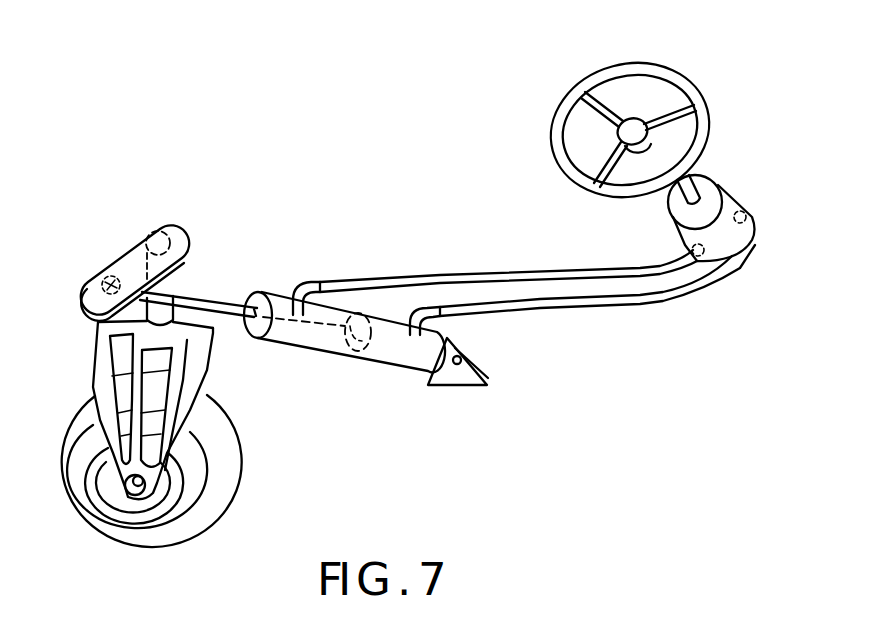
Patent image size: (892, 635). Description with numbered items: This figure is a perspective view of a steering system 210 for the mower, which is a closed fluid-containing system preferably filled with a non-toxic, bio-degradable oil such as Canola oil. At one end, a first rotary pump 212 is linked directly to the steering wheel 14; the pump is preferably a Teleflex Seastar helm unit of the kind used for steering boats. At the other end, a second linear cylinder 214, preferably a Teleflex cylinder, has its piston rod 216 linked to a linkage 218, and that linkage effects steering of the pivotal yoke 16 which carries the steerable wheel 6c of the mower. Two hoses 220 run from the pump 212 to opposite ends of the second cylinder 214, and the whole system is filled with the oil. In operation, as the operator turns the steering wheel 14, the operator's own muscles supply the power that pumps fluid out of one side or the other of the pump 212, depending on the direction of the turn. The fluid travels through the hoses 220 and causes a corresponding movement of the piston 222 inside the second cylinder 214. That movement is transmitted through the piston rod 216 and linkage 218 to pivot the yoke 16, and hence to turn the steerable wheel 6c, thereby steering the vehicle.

The steering system 210 is at (346, 211).
The steering wheel 14 is at (683, 73).
The first rotary pump 212 is at (727, 197).
The hoses 220 is at (467, 272).
The second linear cylinder 214 is at (330, 328).
The piston 222 is at (373, 350).
The piston rod 216 is at (213, 300).
The linkage 218 is at (128, 243).
The pivotal yoke 16 is at (95, 352).
The steerable wheel 6c is at (222, 438).